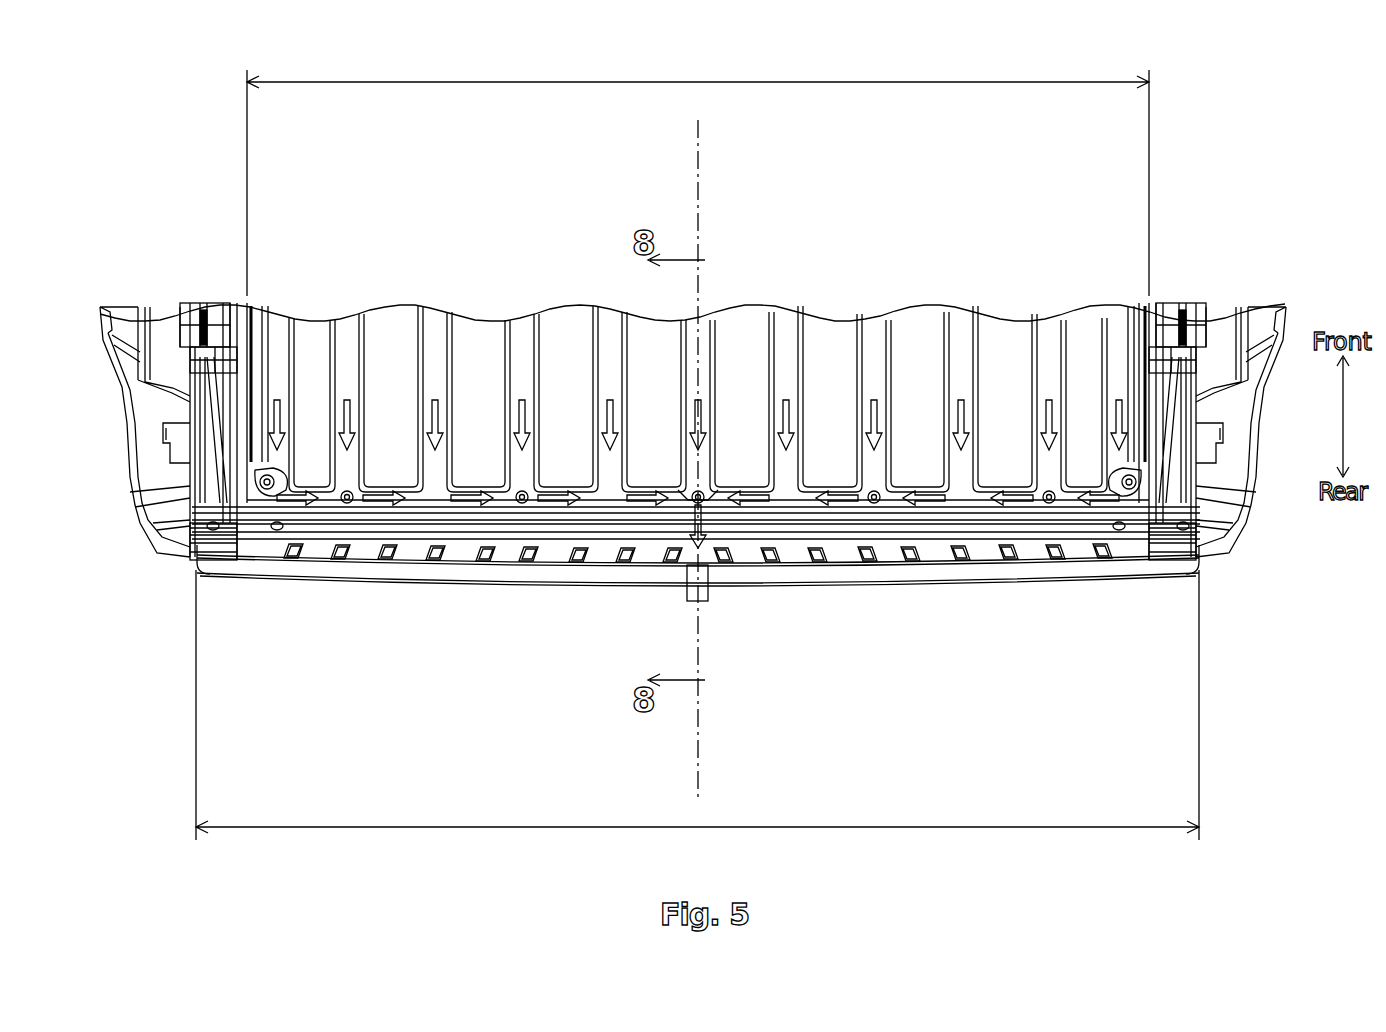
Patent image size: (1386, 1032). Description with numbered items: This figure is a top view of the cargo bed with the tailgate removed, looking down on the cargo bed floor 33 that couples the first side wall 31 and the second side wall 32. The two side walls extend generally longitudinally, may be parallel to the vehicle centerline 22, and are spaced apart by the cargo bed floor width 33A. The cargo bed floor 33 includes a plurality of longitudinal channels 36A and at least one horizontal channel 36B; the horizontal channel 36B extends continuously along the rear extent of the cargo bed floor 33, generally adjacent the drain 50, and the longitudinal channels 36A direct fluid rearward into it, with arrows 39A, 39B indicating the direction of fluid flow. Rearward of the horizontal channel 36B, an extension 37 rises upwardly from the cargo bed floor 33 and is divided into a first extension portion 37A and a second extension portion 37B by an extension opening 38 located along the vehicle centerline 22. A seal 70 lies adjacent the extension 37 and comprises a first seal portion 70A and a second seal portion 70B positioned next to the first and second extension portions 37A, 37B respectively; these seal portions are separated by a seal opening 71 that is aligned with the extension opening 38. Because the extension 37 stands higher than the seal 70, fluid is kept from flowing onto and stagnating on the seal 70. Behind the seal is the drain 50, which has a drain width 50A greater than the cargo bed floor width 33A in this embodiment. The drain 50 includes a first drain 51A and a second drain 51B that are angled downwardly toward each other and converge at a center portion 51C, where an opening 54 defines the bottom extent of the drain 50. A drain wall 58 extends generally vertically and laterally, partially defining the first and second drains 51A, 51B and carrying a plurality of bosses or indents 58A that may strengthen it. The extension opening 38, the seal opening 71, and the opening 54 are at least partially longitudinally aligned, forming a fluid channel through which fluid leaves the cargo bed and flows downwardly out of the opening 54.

The vehicle centerline 22 is at (700, 770).
The first side wall 31 is at (1235, 330).
The second side wall 32 is at (162, 328).
The cargo bed floor 33 is at (395, 333).
The cargo bed floor width 33A is at (700, 80).
The longitudinal channels 36A is at (316, 335).
The horizontal channel 36B is at (1070, 487).
The extension 37 is at (597, 512).
The first extension portion 37A is at (745, 505).
The second extension portion 37B is at (508, 505).
The extension opening 38 is at (695, 490).
The arrows 39A is at (873, 417).
The arrows 39B is at (298, 497).
The drain 50 is at (698, 626).
The drain width 50A is at (583, 830).
The first drain 51A is at (1022, 585).
The second drain 51B is at (380, 583).
The center portion 51C is at (703, 588).
The opening 54 is at (700, 590).
The drain wall 58 is at (1128, 553).
The bosses or indents 58A is at (483, 558).
The seal 70 is at (810, 518).
The first seal portion 70A is at (1080, 512).
The second seal portion 70B is at (320, 510).
The seal opening 71 is at (690, 572).